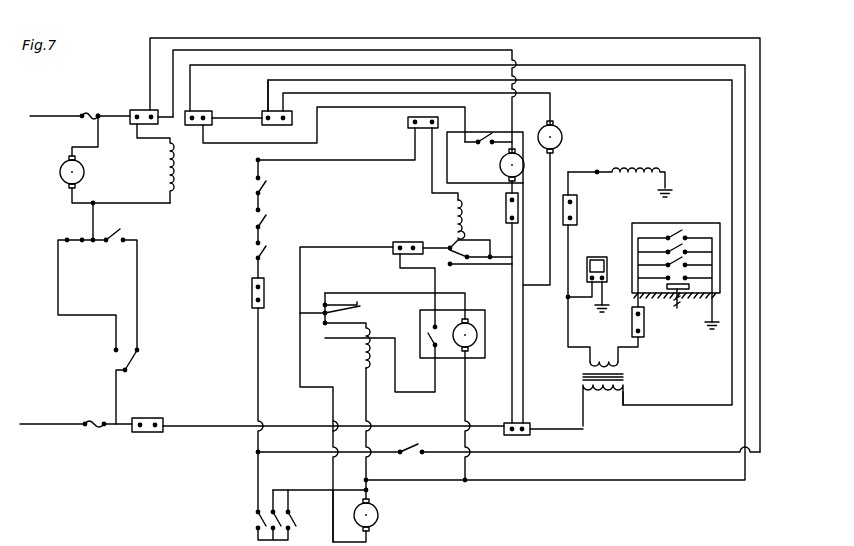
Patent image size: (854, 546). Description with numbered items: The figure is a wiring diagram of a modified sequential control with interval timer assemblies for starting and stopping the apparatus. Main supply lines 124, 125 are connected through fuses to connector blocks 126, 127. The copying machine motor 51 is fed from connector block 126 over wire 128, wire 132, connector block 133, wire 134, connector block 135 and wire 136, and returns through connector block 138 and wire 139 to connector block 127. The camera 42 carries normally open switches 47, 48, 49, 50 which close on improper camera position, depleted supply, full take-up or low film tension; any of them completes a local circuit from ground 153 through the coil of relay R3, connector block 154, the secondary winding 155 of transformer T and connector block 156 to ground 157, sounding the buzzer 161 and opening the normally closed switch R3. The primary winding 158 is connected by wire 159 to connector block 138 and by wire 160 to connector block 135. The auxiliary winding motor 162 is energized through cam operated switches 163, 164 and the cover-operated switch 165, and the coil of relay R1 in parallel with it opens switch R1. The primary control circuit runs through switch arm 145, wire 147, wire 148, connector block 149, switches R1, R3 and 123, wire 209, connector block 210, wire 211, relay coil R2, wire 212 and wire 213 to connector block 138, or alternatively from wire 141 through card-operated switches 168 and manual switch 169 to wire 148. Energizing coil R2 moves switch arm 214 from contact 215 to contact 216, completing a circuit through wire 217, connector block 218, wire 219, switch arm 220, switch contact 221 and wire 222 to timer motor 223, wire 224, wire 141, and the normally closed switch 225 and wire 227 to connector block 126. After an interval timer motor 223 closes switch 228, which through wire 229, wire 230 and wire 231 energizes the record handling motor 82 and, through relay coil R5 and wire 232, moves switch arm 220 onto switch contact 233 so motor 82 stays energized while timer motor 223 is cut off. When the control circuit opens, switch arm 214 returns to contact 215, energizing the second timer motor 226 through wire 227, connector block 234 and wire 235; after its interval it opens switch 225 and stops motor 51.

The camera 42 is at (708, 223).
The normally open switch 47 is at (678, 306).
The normally open switch 48 is at (664, 262).
The normally open switch 49 is at (666, 246).
The normally open switch 50 is at (672, 232).
The copying machine motor 51 is at (562, 132).
The record handling means motor 82 is at (379, 510).
The switch 123 is at (254, 187).
The main supply line 124 is at (50, 116).
The main supply line 125 is at (47, 424).
The connector block 126 is at (144, 110).
The connector block 127 is at (165, 408).
The wire 128 is at (386, 38).
The wire 132 is at (252, 144).
The connector block 133 is at (198, 111).
The wire 134 is at (258, 115).
The connector block 135 is at (268, 101).
The wire 136 is at (548, 93).
The connector block 138 is at (512, 423).
The wire 139 is at (412, 416).
The wire 141 is at (608, 65).
The switch arm 145 is at (413, 448).
The wire 147 is at (315, 452).
The wire 148 is at (258, 362).
The connector block 149 is at (252, 301).
The ground 153 is at (658, 194).
The connector block 154 is at (578, 207).
The secondary winding 155 is at (605, 354).
The connector block 156 is at (644, 334).
The ground 157 is at (712, 332).
The primary winding 158 is at (589, 393).
The wire 159 is at (583, 426).
The wire 160 is at (676, 82).
The buzzer 161 is at (597, 257).
The winding motor 162 is at (60, 176).
The cam operated switch 163 is at (80, 237).
The cam operated switch 164 is at (112, 236).
The single pole double throw switch 165 is at (134, 368).
The card-operated switch 168 is at (293, 522).
The normally closed manually operable switch 169 is at (254, 520).
The wire 209 is at (366, 160).
The connector block 210 is at (408, 122).
The wire 211 is at (432, 188).
The wire 212 is at (463, 241).
The wire 213 is at (512, 312).
The switch arm 214 is at (455, 256).
The contact 215 is at (451, 266).
The contact 216 is at (449, 246).
The wire 217 is at (415, 242).
The connector block 218 is at (396, 242).
The wire 219 is at (335, 247).
The switch arm 220 is at (361, 305).
The switch contact 221 is at (322, 302).
The wire 222 is at (387, 293).
The timer motor 223 is at (468, 350).
The wire 224 is at (465, 396).
The normally closed switch 225 is at (479, 136).
The second timer motor 226 is at (500, 167).
The wire 227 is at (316, 50).
The normally open switch 228 is at (432, 328).
The wire 229 is at (400, 266).
The wire 230 is at (422, 384).
The wire 231 is at (300, 376).
The wire 232 is at (366, 398).
The switch contact 233 is at (323, 322).
The connector block 234 is at (518, 214).
The wire 235 is at (513, 258).
The relay R1 is at (177, 174).
The relay coil R2 is at (463, 210).
The relay R3 is at (253, 221).
The relay coil R5 is at (363, 364).
The transformer T is at (628, 378).